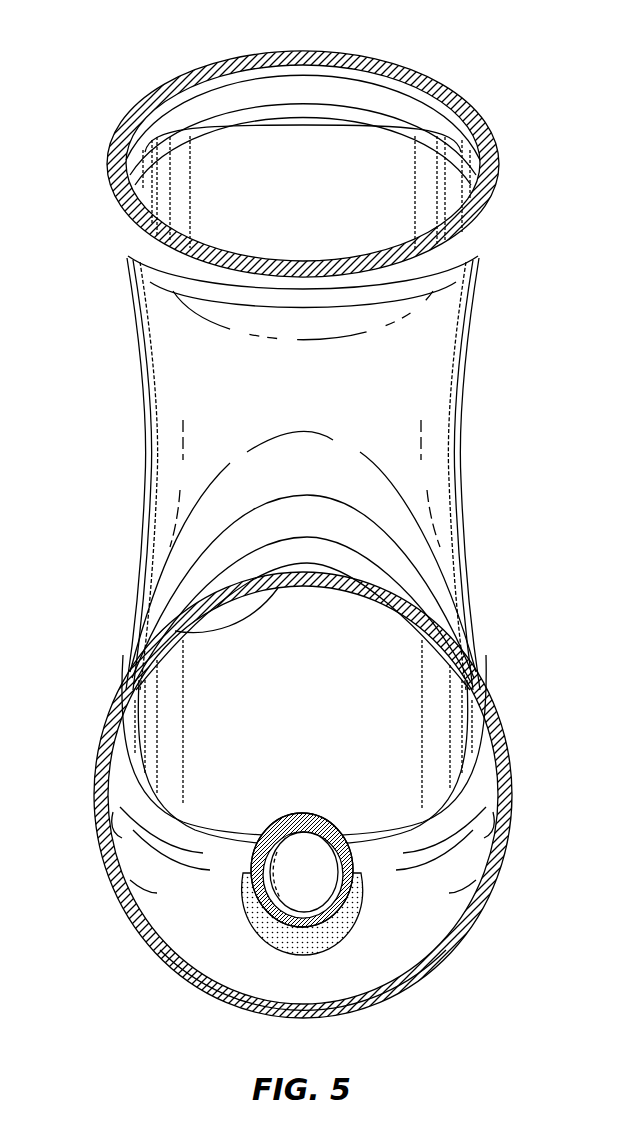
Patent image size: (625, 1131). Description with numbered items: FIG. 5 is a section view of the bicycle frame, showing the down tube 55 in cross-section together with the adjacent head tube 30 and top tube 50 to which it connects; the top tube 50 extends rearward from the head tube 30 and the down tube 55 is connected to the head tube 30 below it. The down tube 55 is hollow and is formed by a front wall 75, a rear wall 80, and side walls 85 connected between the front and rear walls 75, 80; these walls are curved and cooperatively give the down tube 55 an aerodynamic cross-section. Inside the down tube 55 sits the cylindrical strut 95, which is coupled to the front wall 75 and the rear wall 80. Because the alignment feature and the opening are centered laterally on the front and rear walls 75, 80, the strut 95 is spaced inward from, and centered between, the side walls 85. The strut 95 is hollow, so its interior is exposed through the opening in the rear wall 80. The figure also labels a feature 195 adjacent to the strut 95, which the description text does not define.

The top tube 50 is at (332, 60).
The head tube 30 is at (387, 172).
The down tube 55 is at (497, 676).
The rear wall 80 is at (175, 631).
The side walls 85 is at (112, 808).
The strut 95 is at (243, 877).
The front wall 75 is at (274, 986).
The pad 195 is at (344, 926).